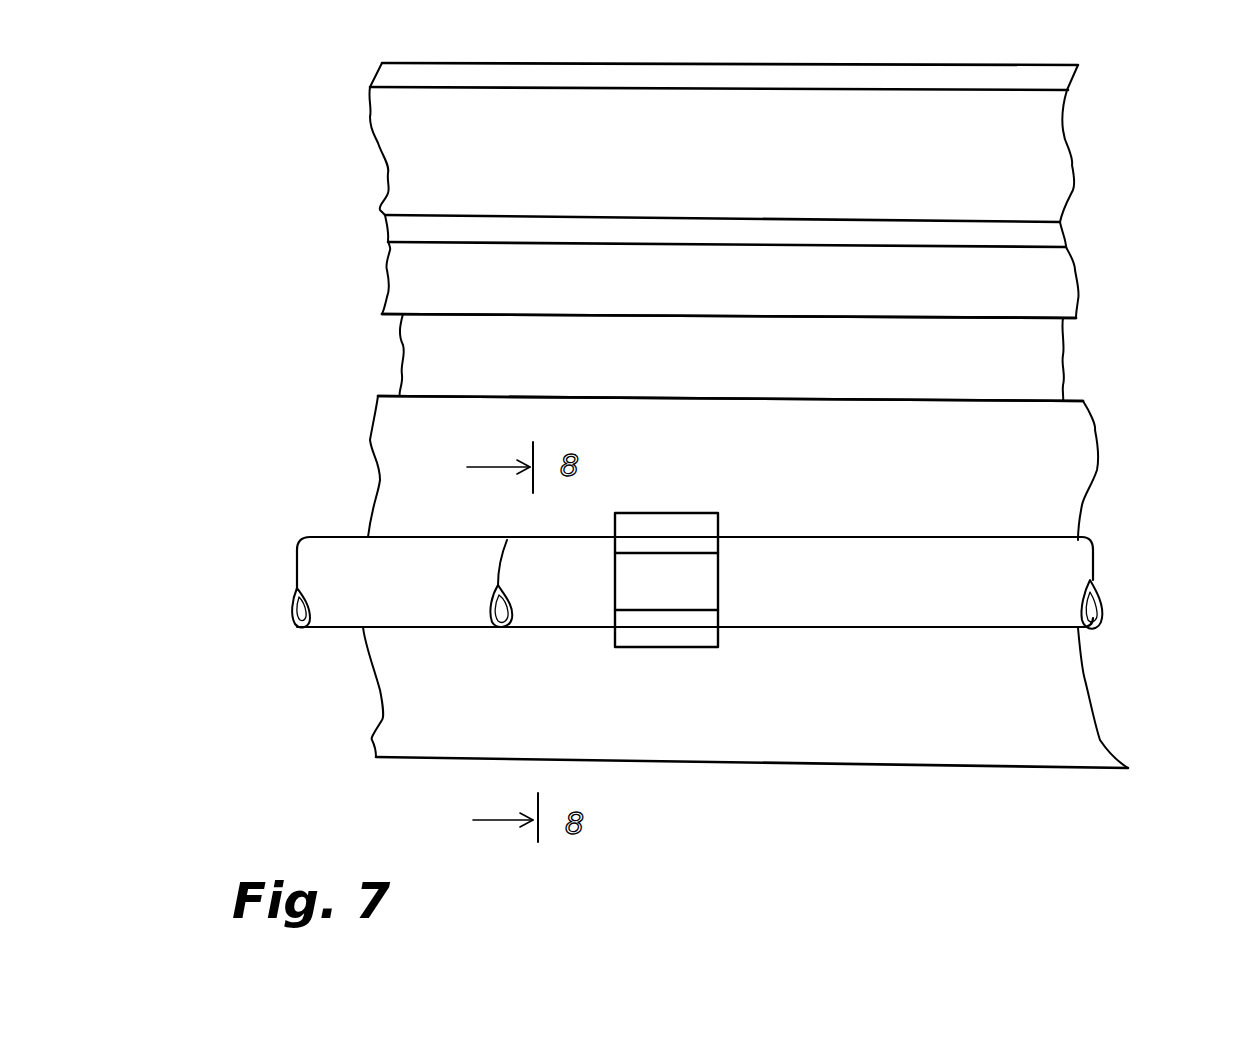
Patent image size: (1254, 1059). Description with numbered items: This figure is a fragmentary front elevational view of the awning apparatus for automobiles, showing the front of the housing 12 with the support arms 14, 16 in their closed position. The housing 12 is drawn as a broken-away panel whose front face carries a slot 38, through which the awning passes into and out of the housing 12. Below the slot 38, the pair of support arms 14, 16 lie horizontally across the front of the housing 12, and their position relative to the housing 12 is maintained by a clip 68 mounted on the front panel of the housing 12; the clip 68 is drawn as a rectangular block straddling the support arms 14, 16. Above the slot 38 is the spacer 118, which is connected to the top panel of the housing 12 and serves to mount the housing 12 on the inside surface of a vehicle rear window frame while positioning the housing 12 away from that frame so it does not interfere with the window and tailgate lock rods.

The spacer 118 is at (1068, 147).
The slot 38 is at (1035, 353).
The housing 12 is at (1075, 713).
The support arm 16 is at (1055, 573).
The support arm 14 is at (353, 607).
The clip 68 is at (705, 647).